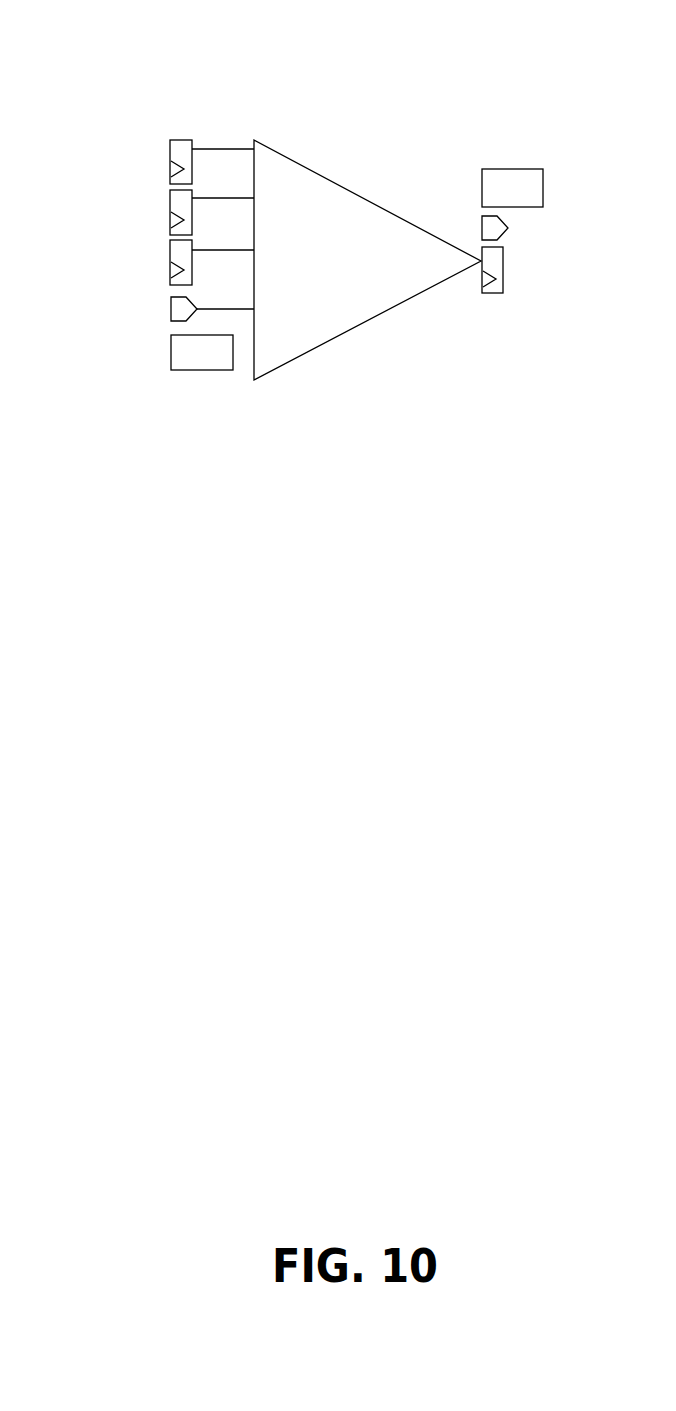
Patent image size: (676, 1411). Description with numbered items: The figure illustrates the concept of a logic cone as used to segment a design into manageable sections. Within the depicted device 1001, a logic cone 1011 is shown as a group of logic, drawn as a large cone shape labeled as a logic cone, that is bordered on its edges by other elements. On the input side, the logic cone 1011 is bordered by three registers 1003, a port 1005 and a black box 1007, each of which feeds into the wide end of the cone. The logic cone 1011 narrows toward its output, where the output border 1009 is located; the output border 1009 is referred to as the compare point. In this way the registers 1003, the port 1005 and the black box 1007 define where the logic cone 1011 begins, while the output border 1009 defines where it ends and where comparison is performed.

The device 1001 is at (126, 62).
The registers 1003 is at (170, 148).
The ports 1005 is at (171, 308).
The black boxes 1007 is at (171, 350).
The output border 1009 is at (503, 265).
The logic cone 1011 is at (330, 340).